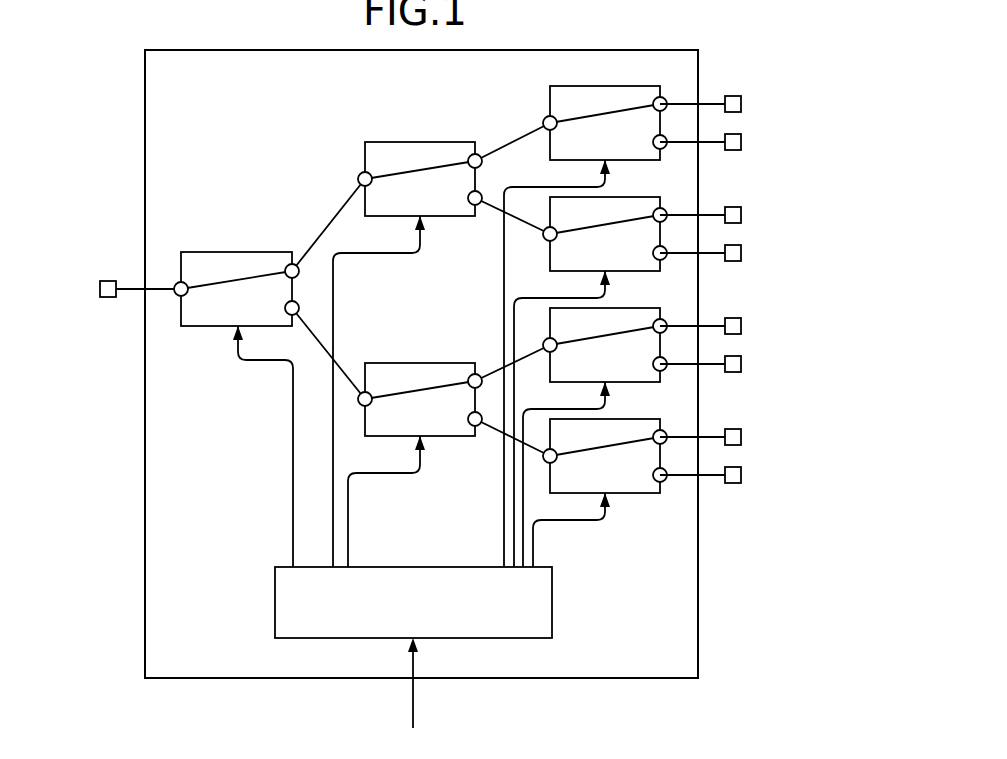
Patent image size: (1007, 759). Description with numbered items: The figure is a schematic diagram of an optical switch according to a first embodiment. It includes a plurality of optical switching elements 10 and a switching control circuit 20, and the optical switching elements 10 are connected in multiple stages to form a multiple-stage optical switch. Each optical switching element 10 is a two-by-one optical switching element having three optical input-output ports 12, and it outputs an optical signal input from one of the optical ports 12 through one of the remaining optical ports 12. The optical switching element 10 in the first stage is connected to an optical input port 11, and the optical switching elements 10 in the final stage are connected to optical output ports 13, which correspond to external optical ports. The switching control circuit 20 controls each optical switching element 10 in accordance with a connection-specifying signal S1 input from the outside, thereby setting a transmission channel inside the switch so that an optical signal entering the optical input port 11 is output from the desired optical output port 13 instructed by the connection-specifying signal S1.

The optical switching element 10 is at (215, 252).
The optical input port 11 is at (98, 289).
The optical input-output port 12 is at (290, 263).
The optical output port 13 is at (730, 290).
The switching control circuit 20 is at (552, 600).
The connection-specifying signal S1 is at (415, 703).